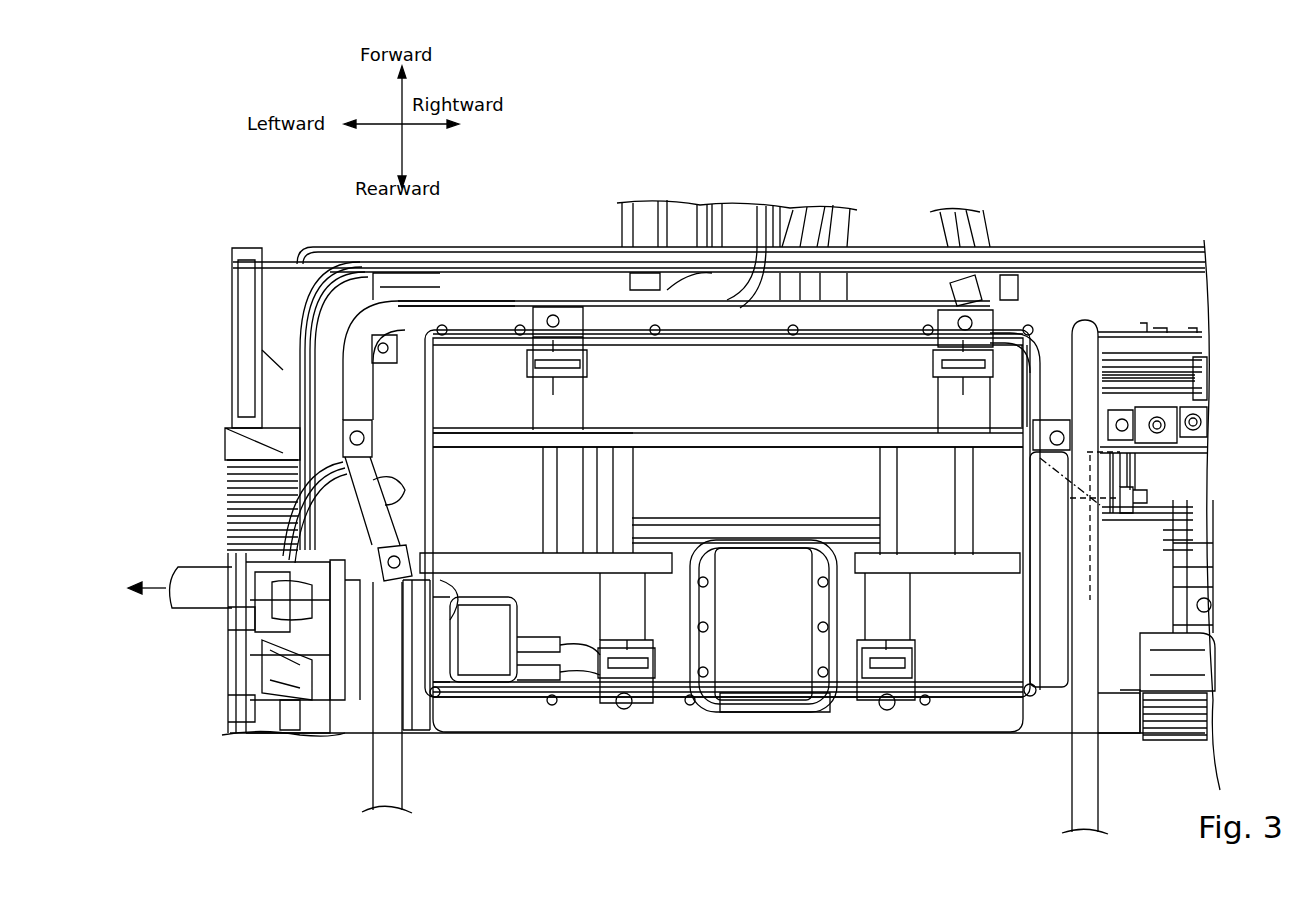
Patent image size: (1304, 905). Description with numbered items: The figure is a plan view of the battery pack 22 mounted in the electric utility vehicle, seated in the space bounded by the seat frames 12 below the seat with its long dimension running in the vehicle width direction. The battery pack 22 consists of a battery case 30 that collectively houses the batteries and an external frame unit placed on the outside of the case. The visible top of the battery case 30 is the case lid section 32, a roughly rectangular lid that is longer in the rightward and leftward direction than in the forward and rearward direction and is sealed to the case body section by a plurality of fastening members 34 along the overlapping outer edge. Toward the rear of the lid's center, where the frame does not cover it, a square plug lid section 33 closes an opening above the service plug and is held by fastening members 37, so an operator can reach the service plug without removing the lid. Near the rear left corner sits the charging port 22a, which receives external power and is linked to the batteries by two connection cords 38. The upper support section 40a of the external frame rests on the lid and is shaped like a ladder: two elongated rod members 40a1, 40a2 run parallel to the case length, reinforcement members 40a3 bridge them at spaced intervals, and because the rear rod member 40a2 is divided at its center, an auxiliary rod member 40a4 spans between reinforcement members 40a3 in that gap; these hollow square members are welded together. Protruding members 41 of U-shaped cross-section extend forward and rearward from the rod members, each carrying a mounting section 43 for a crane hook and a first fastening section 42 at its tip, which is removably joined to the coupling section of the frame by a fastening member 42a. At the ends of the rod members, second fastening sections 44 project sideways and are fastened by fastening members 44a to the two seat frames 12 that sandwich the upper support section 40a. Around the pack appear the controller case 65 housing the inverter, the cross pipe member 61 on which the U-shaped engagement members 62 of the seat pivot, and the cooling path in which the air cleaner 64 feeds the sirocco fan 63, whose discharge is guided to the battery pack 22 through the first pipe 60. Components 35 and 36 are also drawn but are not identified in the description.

The seat frames 12 is at (1035, 238).
The battery pack 22 is at (430, 745).
The charging port 22a is at (478, 668).
The battery case 30 is at (848, 700).
The case lid section 32 is at (660, 700).
The plug lid section 33 is at (770, 678).
The fastening members 34 is at (1030, 690).
The bracket 35 is at (392, 600).
The post 36 is at (1043, 537).
The fastening members 37 is at (702, 680).
The connection cords 38 is at (600, 700).
The upper support section 40a is at (846, 105).
The elongated rod member 40a1 is at (515, 440).
The elongated rod member 40a2 is at (568, 555).
The reinforcement members 40a3 is at (622, 500).
The auxiliary rod member 40a4 is at (780, 530).
The protruding members 41 is at (870, 470).
The first fastening section 42 is at (960, 407).
The fastening member 42a is at (945, 300).
The mounting section 43 is at (990, 300).
The second fastening sections 44 is at (300, 330).
The fastening members 44a is at (352, 420).
The first pipe 60 is at (1115, 465).
The cross pipe member 61 is at (1097, 725).
The engagement members 62 is at (232, 628).
The sirocco fan 63 is at (1147, 500).
The air cleaner 64 is at (1183, 735).
The controller case 65 is at (227, 672).